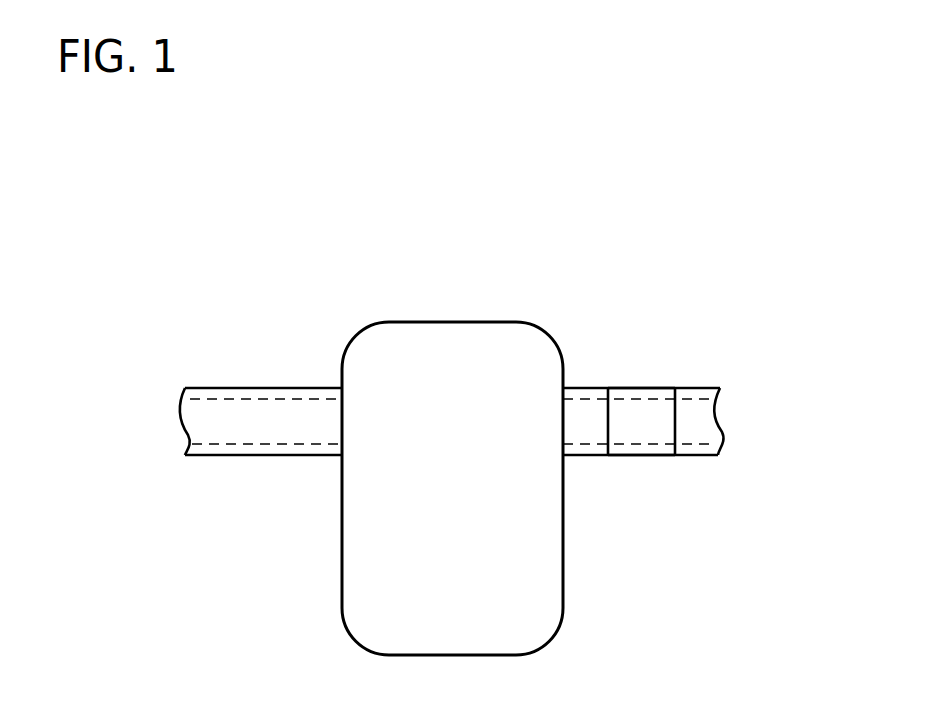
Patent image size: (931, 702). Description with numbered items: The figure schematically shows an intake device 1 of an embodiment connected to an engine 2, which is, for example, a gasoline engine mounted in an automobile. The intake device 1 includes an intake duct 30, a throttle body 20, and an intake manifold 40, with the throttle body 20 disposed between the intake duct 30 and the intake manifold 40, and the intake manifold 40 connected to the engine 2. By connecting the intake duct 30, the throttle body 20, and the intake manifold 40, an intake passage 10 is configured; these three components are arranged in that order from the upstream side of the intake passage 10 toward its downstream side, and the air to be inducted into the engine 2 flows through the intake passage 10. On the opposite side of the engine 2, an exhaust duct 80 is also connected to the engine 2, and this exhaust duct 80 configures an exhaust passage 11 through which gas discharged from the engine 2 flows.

The intake device 1 is at (674, 255).
The engine 2 is at (452, 322).
The intake passage 10 is at (705, 443).
The exhaust passage 11 is at (208, 446).
The throttle body 20 is at (642, 388).
The intake duct 30 is at (698, 388).
The intake manifold 40 is at (586, 388).
The exhaust duct 80 is at (263, 388).